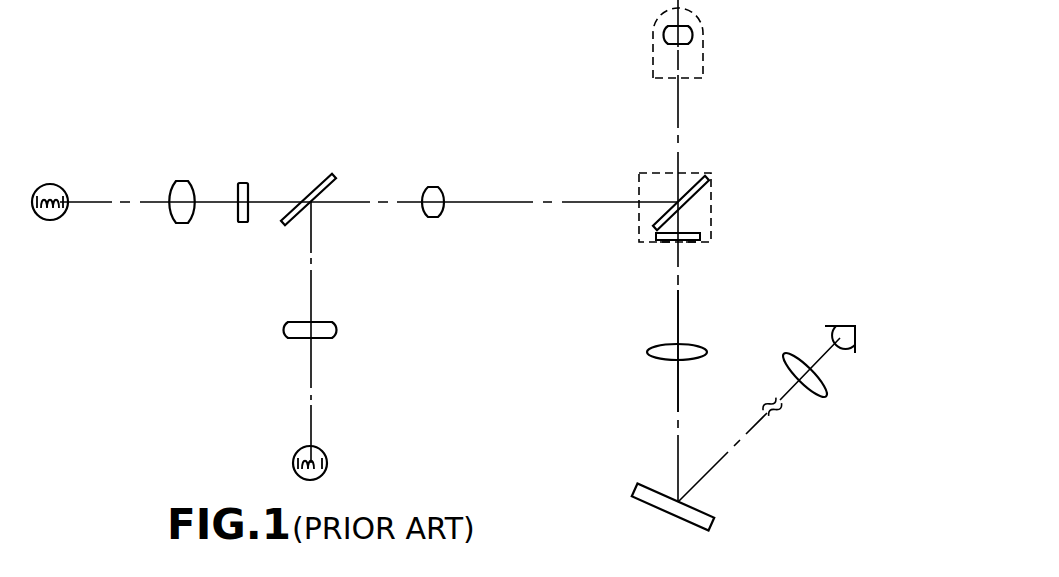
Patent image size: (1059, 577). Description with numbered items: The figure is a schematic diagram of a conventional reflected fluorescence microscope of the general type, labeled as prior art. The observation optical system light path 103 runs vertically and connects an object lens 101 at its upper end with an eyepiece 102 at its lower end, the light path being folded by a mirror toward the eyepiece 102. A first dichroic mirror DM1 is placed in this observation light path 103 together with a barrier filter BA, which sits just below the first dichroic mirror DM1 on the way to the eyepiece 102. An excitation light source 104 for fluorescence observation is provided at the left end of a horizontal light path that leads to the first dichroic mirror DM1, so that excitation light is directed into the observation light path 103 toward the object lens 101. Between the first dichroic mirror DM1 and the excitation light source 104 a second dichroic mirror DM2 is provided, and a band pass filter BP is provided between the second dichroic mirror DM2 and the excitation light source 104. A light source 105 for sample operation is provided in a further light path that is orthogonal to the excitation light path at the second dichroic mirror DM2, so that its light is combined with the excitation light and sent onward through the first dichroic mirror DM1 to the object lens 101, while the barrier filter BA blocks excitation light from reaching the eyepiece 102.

The object lens 101 is at (692, 60).
The eyepiece 102 is at (814, 398).
The observation optical system light path 103 is at (673, 272).
The excitation light source 104 is at (48, 183).
The light source for sample operation 105 is at (330, 457).
The band pass filter BP is at (238, 185).
The first dichroic mirror DM1 is at (694, 176).
The second dichroic mirror DM2 is at (326, 175).
The barrier filter BA is at (701, 240).